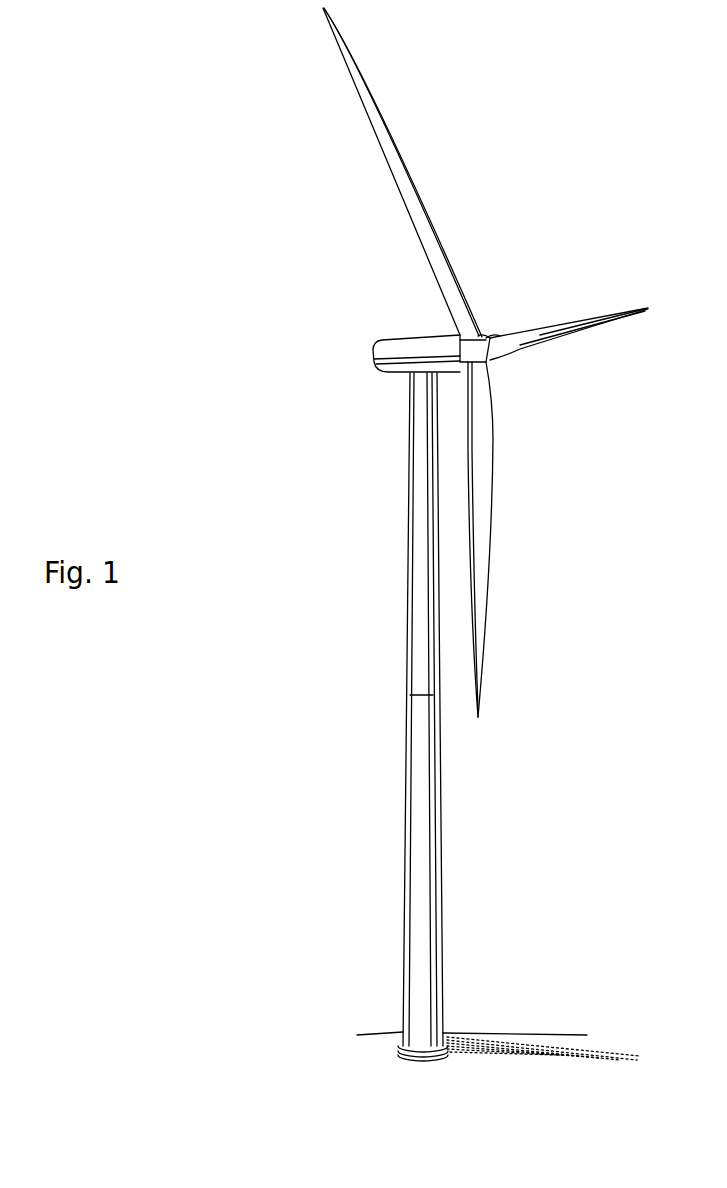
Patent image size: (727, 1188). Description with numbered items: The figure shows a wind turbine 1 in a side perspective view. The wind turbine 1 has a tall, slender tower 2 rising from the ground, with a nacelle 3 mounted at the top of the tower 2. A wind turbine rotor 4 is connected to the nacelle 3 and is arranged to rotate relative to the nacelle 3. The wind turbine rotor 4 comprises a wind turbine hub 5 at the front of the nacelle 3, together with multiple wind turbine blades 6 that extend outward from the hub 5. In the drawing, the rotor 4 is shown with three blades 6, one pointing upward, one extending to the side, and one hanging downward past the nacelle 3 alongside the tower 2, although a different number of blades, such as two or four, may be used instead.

The wind turbine 1 is at (576, 191).
The tower 2 is at (408, 578).
The nacelle 3 is at (387, 352).
The wind turbine rotor 4 is at (532, 394).
The wind turbine hub 5 is at (488, 337).
The wind turbine blade 6 is at (390, 150).